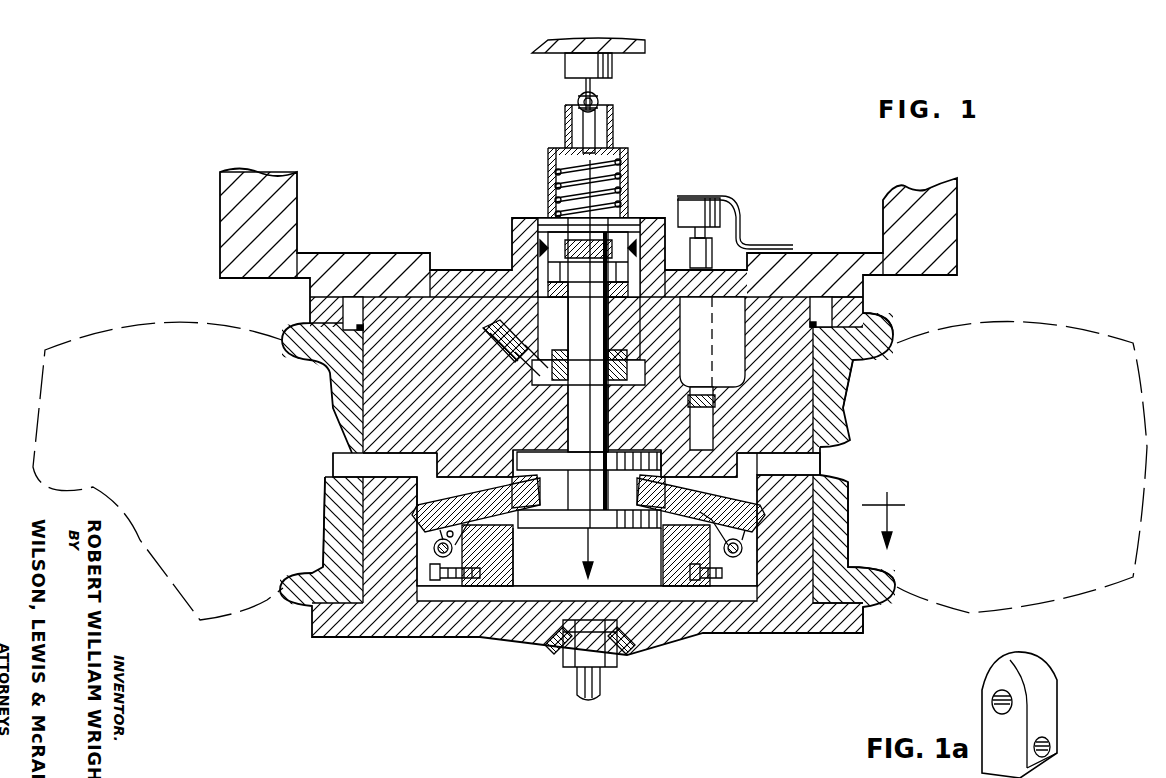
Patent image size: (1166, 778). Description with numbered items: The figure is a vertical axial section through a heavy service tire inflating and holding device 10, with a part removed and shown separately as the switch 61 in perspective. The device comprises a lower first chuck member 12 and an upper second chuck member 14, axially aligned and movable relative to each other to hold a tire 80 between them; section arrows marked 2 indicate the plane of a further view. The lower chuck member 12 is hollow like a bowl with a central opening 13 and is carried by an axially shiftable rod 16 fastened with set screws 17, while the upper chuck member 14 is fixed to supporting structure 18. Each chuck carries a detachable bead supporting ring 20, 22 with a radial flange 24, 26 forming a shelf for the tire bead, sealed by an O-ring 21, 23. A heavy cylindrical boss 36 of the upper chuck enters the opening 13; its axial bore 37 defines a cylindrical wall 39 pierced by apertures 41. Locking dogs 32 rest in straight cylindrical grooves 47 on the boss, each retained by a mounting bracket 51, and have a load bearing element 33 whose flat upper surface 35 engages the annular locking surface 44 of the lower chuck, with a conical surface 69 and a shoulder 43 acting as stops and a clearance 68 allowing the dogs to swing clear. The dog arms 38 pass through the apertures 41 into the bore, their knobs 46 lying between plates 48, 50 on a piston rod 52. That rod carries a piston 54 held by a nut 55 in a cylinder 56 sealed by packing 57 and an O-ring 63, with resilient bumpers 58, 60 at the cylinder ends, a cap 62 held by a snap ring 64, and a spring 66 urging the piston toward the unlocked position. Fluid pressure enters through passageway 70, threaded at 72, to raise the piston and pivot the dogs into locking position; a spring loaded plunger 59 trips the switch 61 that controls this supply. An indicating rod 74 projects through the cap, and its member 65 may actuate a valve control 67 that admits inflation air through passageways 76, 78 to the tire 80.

In FIG. 1, the tire inflating and holding device 10 is at (962, 239).
In FIG. 1, the first chuck member 12 is at (745, 642).
In FIG. 1, the central opening 13 is at (757, 455).
In FIG. 1, the second chuck member 14 is at (745, 346).
In FIG. 1, the axially shiftable rod 16 is at (577, 690).
In FIG. 1, the set screws 17 is at (548, 650).
In FIG. 1, the supporting structure 18 is at (815, 263).
In FIG. 1, the bead supporting ring 20 is at (858, 625).
In FIG. 1, the O-ring 21 is at (818, 625).
In FIG. 1, the bead supporting ring 22 is at (830, 425).
In FIG. 1, the O-ring 23 is at (840, 323).
In FIG. 1, the radial flange 24 is at (885, 590).
In FIG. 1, the radial flange 26 is at (885, 330).
In FIG. 1, the locking dogs 32 is at (486, 491).
In FIG. 1, the load bearing element 33 is at (456, 538).
In FIG. 1, the load bearing surface 35 is at (689, 522).
In FIG. 1, the cylindrical boss 36 is at (430, 480).
In FIG. 1, the axial bore 37 is at (630, 588).
In FIG. 1, the arms 38 is at (454, 535).
In FIG. 1, the cylindrical wall 39 is at (500, 562).
In FIG. 1, the apertures 41 is at (513, 548).
In FIG. 1, the shoulder 43 is at (418, 500).
In FIG. 1, the annular locking surface 44 is at (415, 500).
In FIG. 1, the knobs 46 is at (537, 492).
In FIG. 1, the cylindrical grooves 47 is at (434, 552).
In FIG. 1, the plate 48 is at (517, 455).
In FIG. 1, the plate 50 is at (588, 530).
In FIG. 1, the mounting bracket 51 is at (462, 585).
In FIG. 1, the piston rod 52 is at (568, 424).
In FIG. 1, the piston 54 is at (548, 290).
In FIG. 1, the nut 55 is at (565, 248).
In FIG. 1, the cylinder 56 is at (625, 322).
In FIG. 1, the packing 57 is at (630, 282).
In FIG. 1, the resilient bumper 58 is at (553, 328).
In FIG. 1, the spring loaded plunger 59 is at (724, 237).
In FIG. 1, the resilient bumper 60 is at (690, 250).
In FIG. 1, the switch 61 is at (706, 205).
In FIG. 1A, the switch 61 is at (1045, 683).
In FIG. 1, the cap 62 is at (622, 168).
In FIG. 1, the O-ring 63 is at (588, 369).
In FIG. 1, the snap ring 64 is at (648, 230).
In FIG. 1, the member 65 is at (578, 100).
In FIG. 1, the spring 66 is at (560, 178).
In FIG. 1, the valve control 67 is at (612, 66).
In FIG. 1, the clearance 68 is at (836, 452).
In FIG. 1, the conical surface 69 is at (345, 520).
In FIG. 1, the passageway 70 is at (520, 375).
In FIG. 1, the threaded portion 72 is at (485, 334).
In FIG. 1, the indicating rod 74 is at (595, 137).
In FIG. 1, the passageway 76 is at (705, 432).
In FIG. 1, the passageway 78 is at (690, 402).
In FIG. 1, the tire 80 is at (163, 327).
In FIG. 1, the section line 2 is at (736, 540).